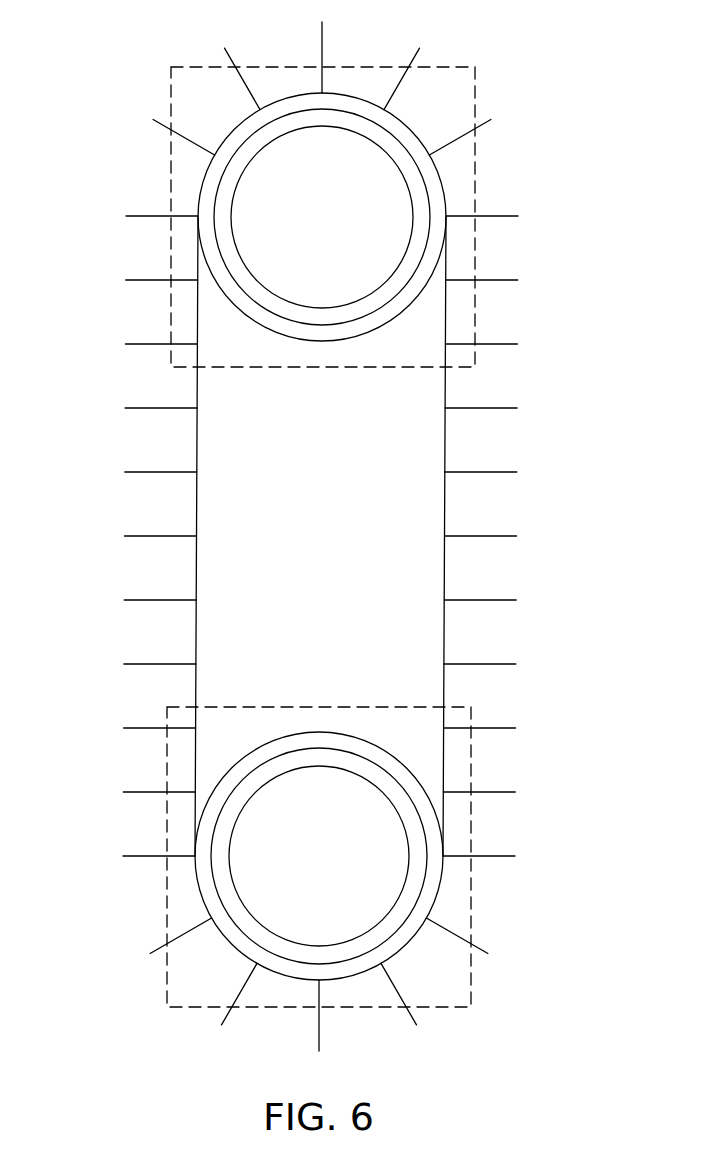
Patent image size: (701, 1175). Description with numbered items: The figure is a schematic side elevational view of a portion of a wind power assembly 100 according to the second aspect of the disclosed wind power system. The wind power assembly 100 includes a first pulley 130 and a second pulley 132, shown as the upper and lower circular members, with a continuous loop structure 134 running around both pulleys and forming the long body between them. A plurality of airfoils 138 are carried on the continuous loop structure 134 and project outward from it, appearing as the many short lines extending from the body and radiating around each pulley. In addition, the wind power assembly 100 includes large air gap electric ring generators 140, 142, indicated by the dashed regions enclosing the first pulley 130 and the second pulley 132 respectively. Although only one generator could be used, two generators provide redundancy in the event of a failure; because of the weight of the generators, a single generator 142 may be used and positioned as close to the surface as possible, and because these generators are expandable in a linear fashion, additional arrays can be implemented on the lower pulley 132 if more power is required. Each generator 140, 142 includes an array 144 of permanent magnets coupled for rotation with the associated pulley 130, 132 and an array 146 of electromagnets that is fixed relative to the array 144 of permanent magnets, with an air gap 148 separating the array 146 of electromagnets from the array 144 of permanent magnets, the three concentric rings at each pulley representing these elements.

The wind power assembly 100 is at (266, 469).
The first pulley 130 is at (393, 191).
The second pulley 132 is at (388, 884).
The continuous loop structure 134 is at (447, 512).
The airfoils 138 is at (420, 50).
The large air gap electric ring generator 140 is at (475, 192).
The large air gap electric ring generator 142 is at (473, 770).
The array of permanent magnets 144 is at (322, 298).
The array of electromagnets 146 is at (383, 313).
The air gap 148 is at (345, 315).